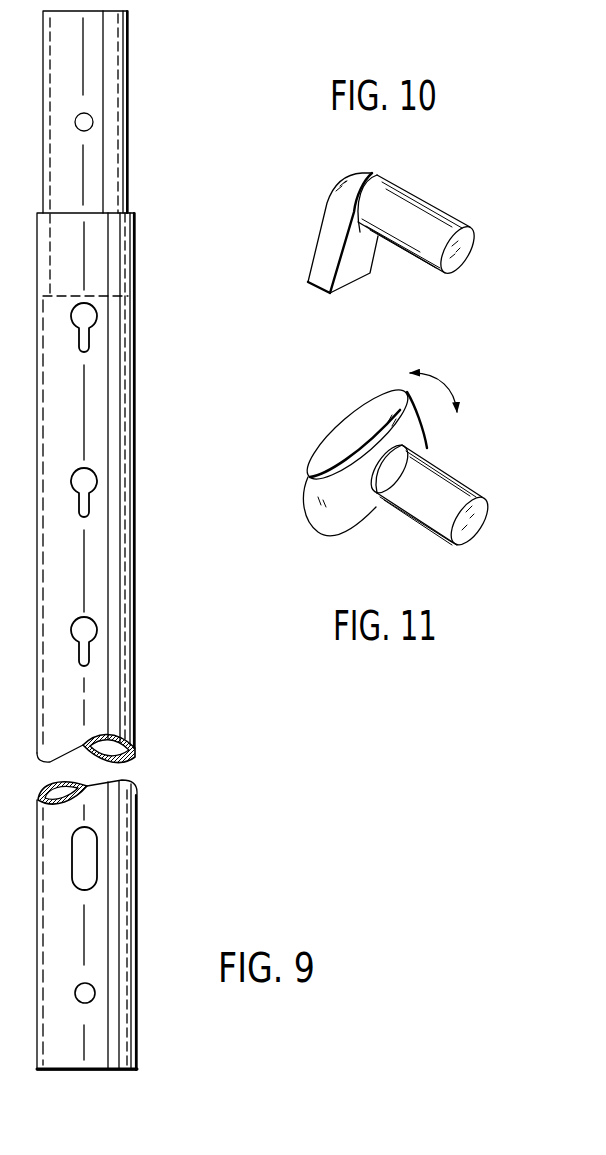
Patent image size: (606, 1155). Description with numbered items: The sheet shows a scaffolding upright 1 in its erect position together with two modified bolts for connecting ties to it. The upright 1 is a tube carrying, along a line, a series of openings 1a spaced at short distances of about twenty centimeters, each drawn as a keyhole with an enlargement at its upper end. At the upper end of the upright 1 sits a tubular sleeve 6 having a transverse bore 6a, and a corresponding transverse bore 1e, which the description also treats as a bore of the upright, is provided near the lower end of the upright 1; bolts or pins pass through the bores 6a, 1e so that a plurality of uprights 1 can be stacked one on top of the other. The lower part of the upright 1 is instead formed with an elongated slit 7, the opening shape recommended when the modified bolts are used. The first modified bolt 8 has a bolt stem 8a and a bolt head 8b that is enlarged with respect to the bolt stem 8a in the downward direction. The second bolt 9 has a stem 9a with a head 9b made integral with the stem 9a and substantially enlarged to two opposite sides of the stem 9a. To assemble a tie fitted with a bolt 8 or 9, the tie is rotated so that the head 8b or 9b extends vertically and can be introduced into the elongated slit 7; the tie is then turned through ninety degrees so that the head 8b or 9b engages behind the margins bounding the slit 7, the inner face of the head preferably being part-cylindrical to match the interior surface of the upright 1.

In FIG. 9, the upright 1 is at (111, 641).
In FIG. 9, the openings 1a is at (99, 318).
In FIG. 9, the hole 1e is at (96, 993).
In FIG. 9, the tubular sleeve 6 is at (93, 153).
In FIG. 9, the transverse bore 6a is at (75, 122).
In FIG. 9, the elongated slit 7 is at (97, 856).
In FIG. 10, the bolt 8 is at (400, 233).
In FIG. 10, the bolt stem 8a is at (437, 217).
In FIG. 10, the bolt head 8b is at (350, 262).
In FIG. 11, the bolt 9 is at (395, 478).
In FIG. 11, the stem 9a is at (418, 498).
In FIG. 11, the head 9b is at (332, 518).